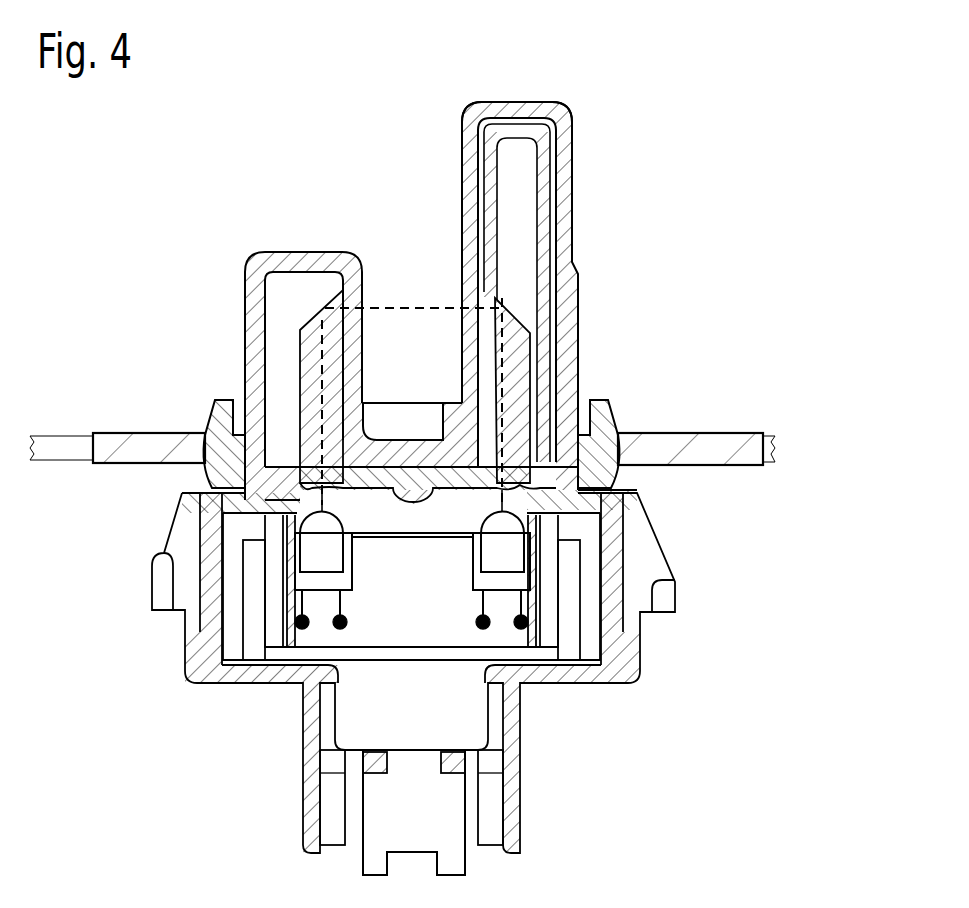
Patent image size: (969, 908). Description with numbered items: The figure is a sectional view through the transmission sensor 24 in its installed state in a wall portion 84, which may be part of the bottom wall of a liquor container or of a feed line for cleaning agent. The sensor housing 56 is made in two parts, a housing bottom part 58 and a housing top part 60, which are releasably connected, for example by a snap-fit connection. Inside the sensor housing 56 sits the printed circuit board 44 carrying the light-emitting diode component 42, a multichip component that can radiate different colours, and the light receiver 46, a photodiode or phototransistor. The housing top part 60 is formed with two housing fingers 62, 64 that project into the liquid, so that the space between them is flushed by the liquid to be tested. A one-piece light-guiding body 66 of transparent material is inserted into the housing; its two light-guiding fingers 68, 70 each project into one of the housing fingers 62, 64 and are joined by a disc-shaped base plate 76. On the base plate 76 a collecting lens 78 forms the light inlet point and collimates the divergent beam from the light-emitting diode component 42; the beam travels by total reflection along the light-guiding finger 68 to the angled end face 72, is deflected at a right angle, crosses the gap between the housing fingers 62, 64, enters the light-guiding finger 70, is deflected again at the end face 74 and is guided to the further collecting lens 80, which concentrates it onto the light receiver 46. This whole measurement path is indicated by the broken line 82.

The transmission sensor 24 is at (630, 194).
The light-emitting diode component 42 is at (318, 553).
The printed circuit board 44 is at (360, 720).
The light receiver 46 is at (508, 558).
The sensor housing 56 is at (576, 233).
The housing bottom part 58 is at (520, 748).
The housing top part 60 is at (245, 291).
The housing finger 62 is at (343, 272).
The housing finger 64 is at (567, 112).
The light-guiding body 66 is at (515, 440).
The light-guiding finger 68 is at (300, 352).
The light-guiding finger 70 is at (520, 352).
The end face 72 is at (306, 322).
The end face 74 is at (505, 318).
The base plate 76 is at (447, 430).
The collecting lens 78 is at (297, 497).
The collecting lens 80 is at (520, 490).
The broken line 82 is at (505, 378).
The wall portion 84 is at (748, 433).